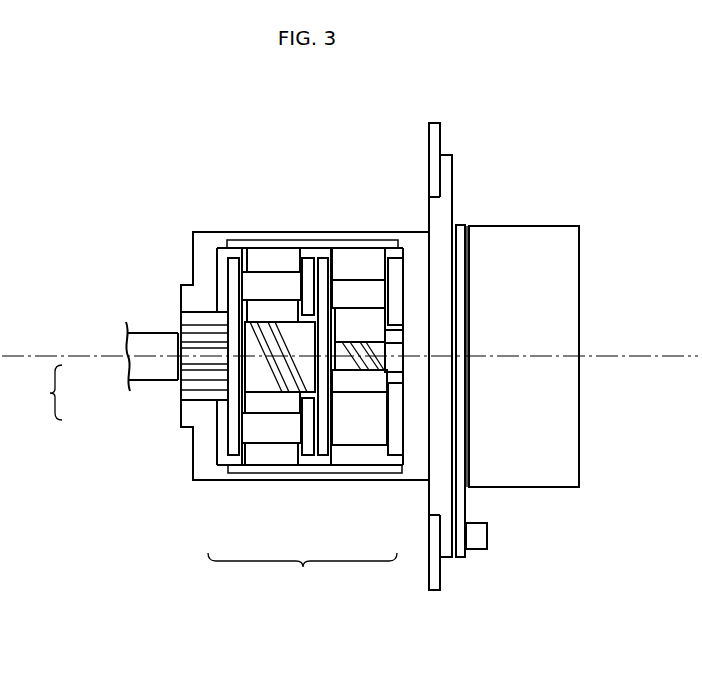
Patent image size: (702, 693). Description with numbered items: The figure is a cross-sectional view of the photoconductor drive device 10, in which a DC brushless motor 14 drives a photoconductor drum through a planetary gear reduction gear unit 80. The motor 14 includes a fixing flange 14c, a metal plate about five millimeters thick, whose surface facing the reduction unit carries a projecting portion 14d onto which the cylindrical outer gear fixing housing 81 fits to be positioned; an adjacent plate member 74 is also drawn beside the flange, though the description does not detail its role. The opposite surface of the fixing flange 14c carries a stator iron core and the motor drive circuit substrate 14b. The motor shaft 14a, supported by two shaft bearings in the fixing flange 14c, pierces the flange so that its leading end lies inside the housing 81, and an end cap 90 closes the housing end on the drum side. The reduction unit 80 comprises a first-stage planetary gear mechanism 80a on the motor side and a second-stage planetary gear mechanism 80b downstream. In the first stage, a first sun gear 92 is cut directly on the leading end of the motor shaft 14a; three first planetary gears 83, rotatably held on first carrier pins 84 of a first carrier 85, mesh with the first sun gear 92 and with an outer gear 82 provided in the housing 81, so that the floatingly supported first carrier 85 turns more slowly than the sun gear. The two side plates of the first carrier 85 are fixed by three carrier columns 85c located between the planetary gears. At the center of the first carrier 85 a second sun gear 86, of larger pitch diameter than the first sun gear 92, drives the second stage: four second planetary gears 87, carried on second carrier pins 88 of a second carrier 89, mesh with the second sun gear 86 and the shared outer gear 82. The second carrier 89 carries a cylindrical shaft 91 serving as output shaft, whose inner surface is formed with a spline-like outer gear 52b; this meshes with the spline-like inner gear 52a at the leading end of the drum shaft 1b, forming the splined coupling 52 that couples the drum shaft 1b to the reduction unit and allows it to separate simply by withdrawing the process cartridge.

The photoconductor drive device 10 is at (286, 146).
The drum shaft 1b is at (134, 331).
The splined coupling 52 is at (127, 366).
The spline-like inner gear 52a is at (183, 368).
The spline-like outer gear 52b is at (180, 386).
The mounting plate 74 is at (442, 130).
The planetary gear reduction gear unit 80 is at (305, 421).
The first-stage planetary gear mechanism 80a is at (352, 452).
The second-stage planetary gear mechanism 80b is at (237, 456).
The outer gear fixing housing 81 is at (412, 233).
The outer gear 82 is at (313, 243).
The first planetary gears 83 is at (376, 256).
The first carrier pins 84 is at (352, 285).
The first carrier 85 is at (323, 456).
The carrier columns 85c is at (375, 440).
The second sun gear 86 is at (250, 380).
The second planetary gears 87 is at (281, 253).
The second carrier pins 88 is at (262, 275).
The second carrier 89 is at (235, 268).
The end cap 90 is at (183, 298).
The cylindrical shaft 91 is at (195, 398).
The first sun gear 92 is at (374, 343).
The motor 14 is at (560, 214).
The motor shaft 14a is at (397, 363).
The motor drive circuit substrate 14b is at (462, 222).
The fixing flange 14c is at (447, 553).
The projecting portion 14d is at (418, 428).